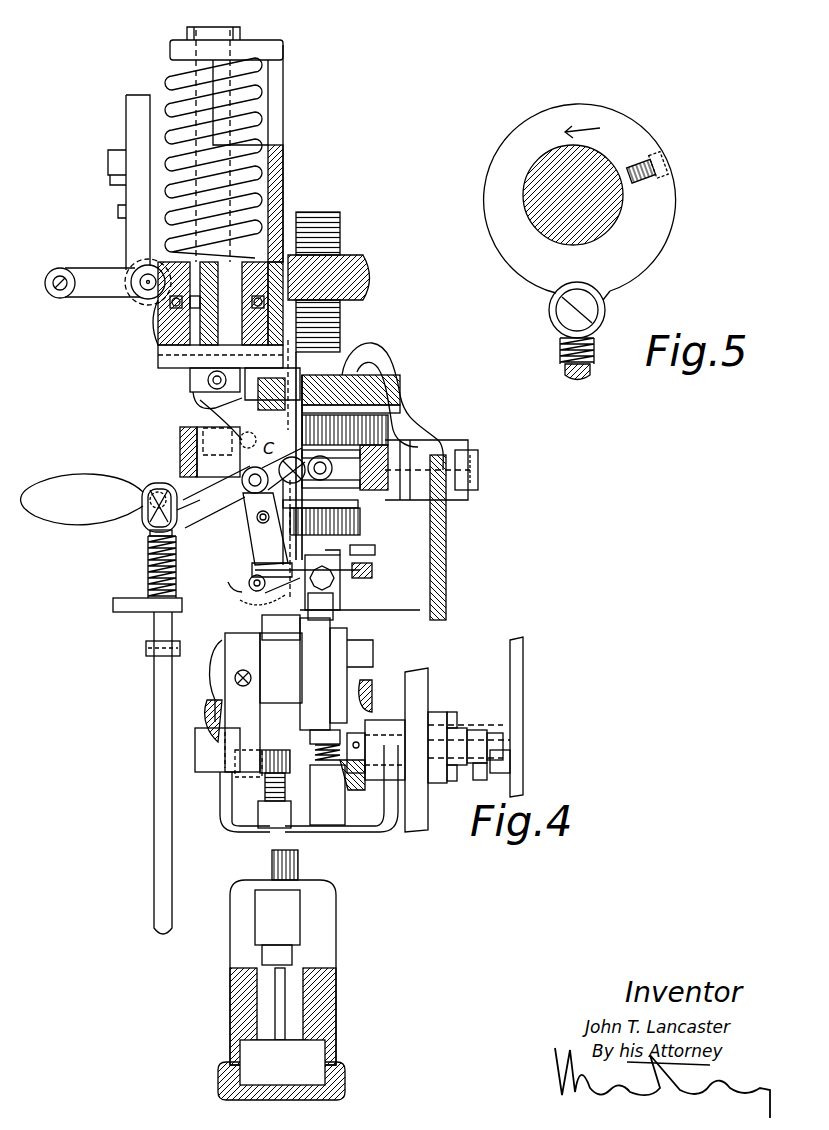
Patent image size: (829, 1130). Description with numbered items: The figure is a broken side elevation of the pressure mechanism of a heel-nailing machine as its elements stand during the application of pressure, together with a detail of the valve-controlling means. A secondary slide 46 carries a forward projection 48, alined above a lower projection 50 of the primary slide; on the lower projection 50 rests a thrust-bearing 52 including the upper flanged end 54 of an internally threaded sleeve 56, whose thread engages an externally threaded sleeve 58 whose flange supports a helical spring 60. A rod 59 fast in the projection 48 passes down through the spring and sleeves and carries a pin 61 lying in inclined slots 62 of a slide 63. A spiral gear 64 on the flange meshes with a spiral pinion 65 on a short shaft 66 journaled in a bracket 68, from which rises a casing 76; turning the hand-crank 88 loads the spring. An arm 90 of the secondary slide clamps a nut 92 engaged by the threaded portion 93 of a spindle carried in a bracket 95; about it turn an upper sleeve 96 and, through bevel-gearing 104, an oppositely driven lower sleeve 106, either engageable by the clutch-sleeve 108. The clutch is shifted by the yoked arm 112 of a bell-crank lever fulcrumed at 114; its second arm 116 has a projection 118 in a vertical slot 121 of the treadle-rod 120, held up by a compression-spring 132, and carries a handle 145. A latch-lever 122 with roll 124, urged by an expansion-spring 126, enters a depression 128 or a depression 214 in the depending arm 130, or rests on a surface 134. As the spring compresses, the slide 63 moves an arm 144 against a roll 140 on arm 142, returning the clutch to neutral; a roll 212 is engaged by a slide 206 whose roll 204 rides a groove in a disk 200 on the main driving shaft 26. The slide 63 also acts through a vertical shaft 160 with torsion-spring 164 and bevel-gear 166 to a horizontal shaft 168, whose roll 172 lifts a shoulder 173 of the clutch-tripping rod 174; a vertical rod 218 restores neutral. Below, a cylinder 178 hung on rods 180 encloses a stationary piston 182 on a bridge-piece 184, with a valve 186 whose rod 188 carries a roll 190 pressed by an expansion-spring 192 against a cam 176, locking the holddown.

In FIG. 4, the forward projection 48 is at (175, 52).
In FIG. 4, the helical spring 60 is at (178, 80).
In FIG. 4, the rod 59 is at (195, 115).
In FIG. 4, the casing 76 is at (128, 108).
In FIG. 4, the secondary slide 46 is at (283, 158).
In FIG. 4, the upper flanged end 54 is at (150, 262).
In FIG. 4, the spiral pinion 65 is at (135, 270).
In FIG. 4, the hand-crank 88 is at (66, 282).
In FIG. 4, the short shaft 66 is at (142, 290).
In FIG. 4, the thrust-bearing 52 is at (160, 305).
In FIG. 4, the bracket 68 is at (160, 333).
In FIG. 4, the lower projection 50 is at (182, 355).
In FIG. 4, the internally threaded sleeve 56 is at (197, 300).
In FIG. 4, the sleeve 58 is at (196, 310).
In FIG. 4, the spiral gear 64 is at (270, 309).
In FIG. 4, the nut 92 is at (338, 262).
In FIG. 4, the arm 90 is at (366, 292).
In FIG. 4, the upper threaded portion 93 is at (342, 320).
In FIG. 4, the vertical rod 218 is at (298, 368).
In FIG. 4, the bracket 95 is at (412, 430).
In FIG. 4, the bevel-gearing 104 is at (370, 420).
In FIG. 4, the upper sleeve 96 is at (410, 446).
In FIG. 4, the intermediate clutch-sleeve 108 is at (392, 450).
In FIG. 4, the lower sleeve 106 is at (366, 508).
In FIG. 4, the yoked arm 112 is at (318, 480).
In FIG. 4, the arm 144 is at (235, 450).
In FIG. 4, the arm 142 is at (240, 460).
In FIG. 4, the slide 63 is at (192, 380).
In FIG. 4, the pin 61 is at (208, 387).
In FIG. 4, the inclined slots 62 is at (218, 396).
In FIG. 4, the roll 140 is at (262, 428).
In FIG. 4, the fulcrum 114 is at (250, 484).
In FIG. 4, the second arm 116 is at (190, 512).
In FIG. 4, the handle 145 is at (68, 520).
In FIG. 4, the projection 118 is at (150, 486).
In FIG. 4, the vertical slot 121 is at (165, 528).
In FIG. 4, the compression-spring 132 is at (150, 568).
In FIG. 4, the rod 120 is at (155, 730).
In FIG. 4, the depending arm 130 is at (270, 524).
In FIG. 4, the roll 212 is at (258, 538).
In FIG. 4, the surface 134 is at (248, 597).
In FIG. 4, the roll 124 is at (250, 590).
In FIG. 4, the depression 128 is at (272, 580).
In FIG. 4, the depression 214 is at (275, 628).
In FIG. 4, the expansion-spring 126 is at (372, 572).
In FIG. 4, the latch-lever 122 is at (332, 588).
In FIG. 4, the cam 176 is at (225, 678).
In FIG. 5, the cam 176 is at (666, 237).
In FIG. 4, the main driving shaft 26 is at (212, 705).
In FIG. 5, the main driving shaft 26 is at (548, 232).
In FIG. 4, the slide 206 is at (263, 705).
In FIG. 4, the roll 204 is at (303, 652).
In FIG. 4, the vertical shaft 160 is at (328, 672).
In FIG. 4, the disk 200 is at (348, 724).
In FIG. 4, the torsion-spring 164 is at (318, 762).
In FIG. 4, the bevel-gear 166 is at (362, 782).
In FIG. 4, the roll 190 is at (250, 782).
In FIG. 5, the roll 190 is at (606, 306).
In FIG. 4, the expansion-spring 192 is at (268, 796).
In FIG. 5, the expansion-spring 192 is at (558, 352).
In FIG. 4, the bridge-piece 184 is at (222, 840).
In FIG. 4, the horizontal shaft 168 is at (500, 748).
In FIG. 4, the roll 172 is at (520, 785).
In FIG. 4, the clutch-tripping rod 174 is at (512, 770).
In FIG. 4, the shoulder 173 is at (493, 775).
In FIG. 4, the rods 180 is at (300, 872).
In FIG. 4, the cylinder 178 is at (232, 1035).
In FIG. 4, the stationary piston 182 is at (322, 1006).
In FIG. 4, the valve rod 188 is at (280, 997).
In FIG. 5, the valve rod 188 is at (592, 370).
In FIG. 4, the valve 186 is at (298, 1062).